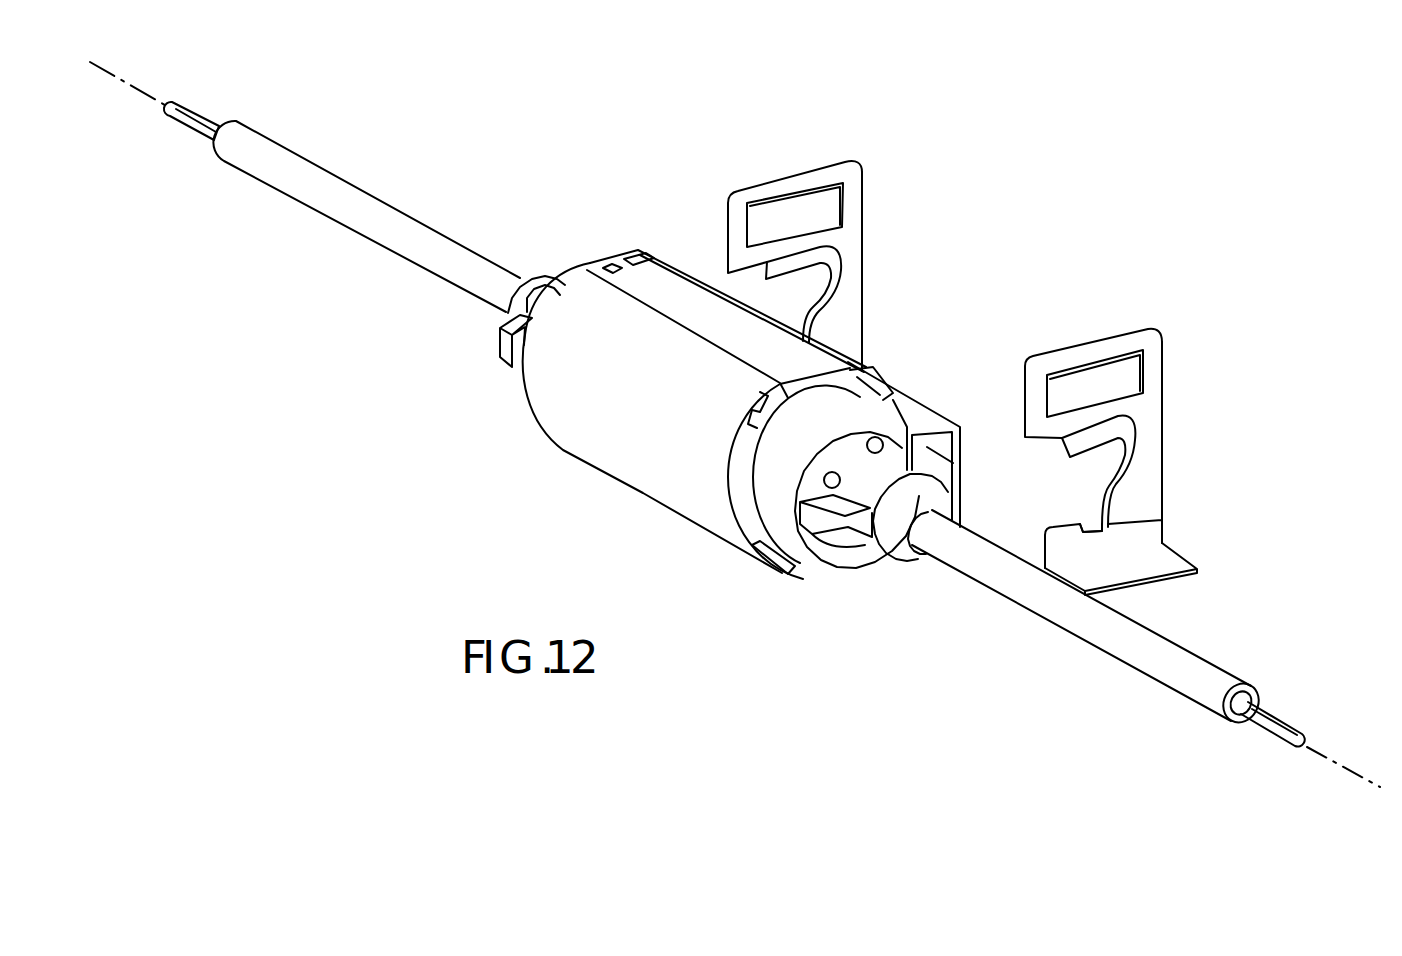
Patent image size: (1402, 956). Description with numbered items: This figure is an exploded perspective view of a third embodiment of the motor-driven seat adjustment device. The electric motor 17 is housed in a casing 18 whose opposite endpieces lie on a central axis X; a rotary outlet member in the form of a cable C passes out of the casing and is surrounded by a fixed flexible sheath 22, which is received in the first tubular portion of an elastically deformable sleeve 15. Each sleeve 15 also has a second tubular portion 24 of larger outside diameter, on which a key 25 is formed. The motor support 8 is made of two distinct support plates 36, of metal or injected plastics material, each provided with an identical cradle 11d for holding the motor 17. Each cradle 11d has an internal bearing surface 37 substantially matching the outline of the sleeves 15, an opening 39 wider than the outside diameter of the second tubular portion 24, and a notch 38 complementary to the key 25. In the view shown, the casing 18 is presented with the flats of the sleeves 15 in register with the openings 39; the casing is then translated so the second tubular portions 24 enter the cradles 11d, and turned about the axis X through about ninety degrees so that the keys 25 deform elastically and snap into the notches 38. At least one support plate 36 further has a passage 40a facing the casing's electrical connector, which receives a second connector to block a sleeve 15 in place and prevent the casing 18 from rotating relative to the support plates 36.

The motor support 8 is at (1147, 321).
The cradle 11d is at (711, 265).
The elastically deformable sleeve 15 is at (891, 597).
The electric motor 17 is at (550, 461).
The casing 18 is at (677, 467).
The flexible sheath 22 is at (1120, 640).
The second tubular portion 24 is at (860, 468).
The key 25 is at (840, 527).
The support plate 36 is at (837, 332).
The internal bearing surface 37 is at (833, 287).
The notch 38 is at (1107, 525).
The opening 39 is at (827, 260).
The passage 40a is at (1080, 380).
The cable C is at (1262, 727).
The central axis X is at (1353, 780).